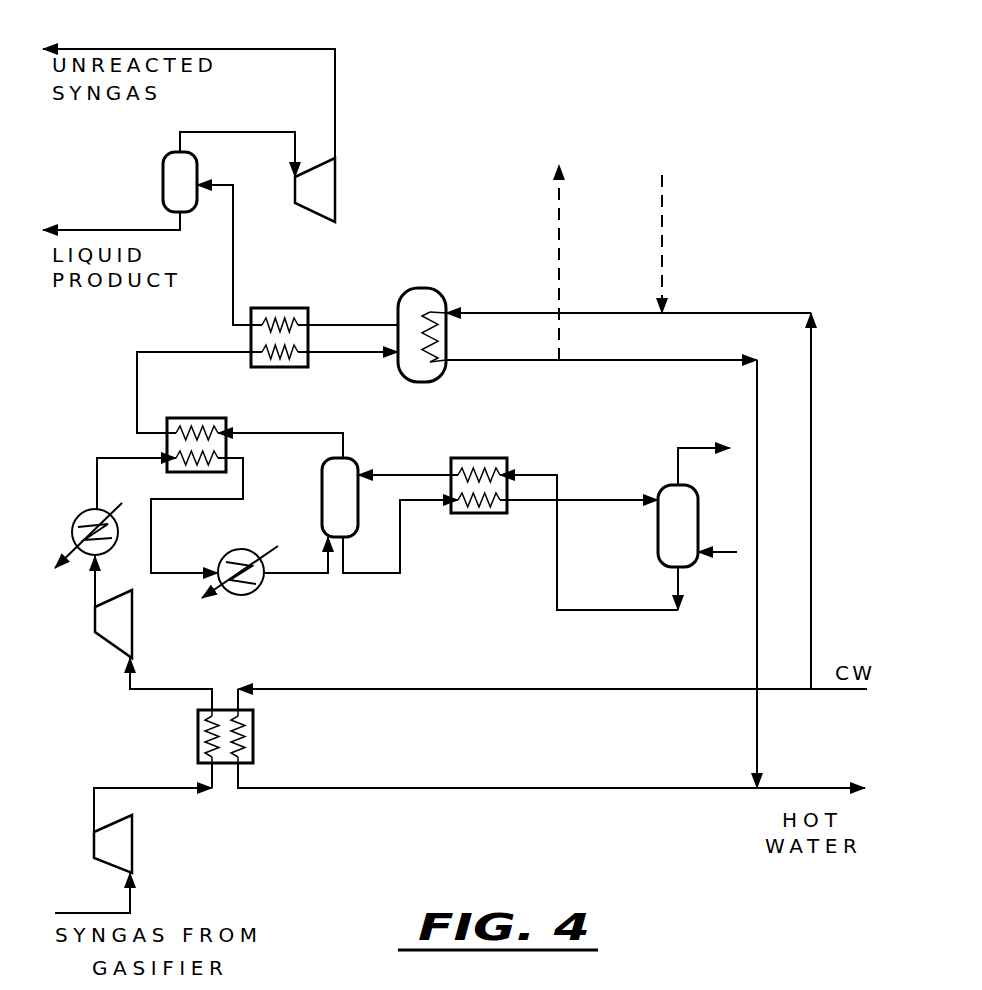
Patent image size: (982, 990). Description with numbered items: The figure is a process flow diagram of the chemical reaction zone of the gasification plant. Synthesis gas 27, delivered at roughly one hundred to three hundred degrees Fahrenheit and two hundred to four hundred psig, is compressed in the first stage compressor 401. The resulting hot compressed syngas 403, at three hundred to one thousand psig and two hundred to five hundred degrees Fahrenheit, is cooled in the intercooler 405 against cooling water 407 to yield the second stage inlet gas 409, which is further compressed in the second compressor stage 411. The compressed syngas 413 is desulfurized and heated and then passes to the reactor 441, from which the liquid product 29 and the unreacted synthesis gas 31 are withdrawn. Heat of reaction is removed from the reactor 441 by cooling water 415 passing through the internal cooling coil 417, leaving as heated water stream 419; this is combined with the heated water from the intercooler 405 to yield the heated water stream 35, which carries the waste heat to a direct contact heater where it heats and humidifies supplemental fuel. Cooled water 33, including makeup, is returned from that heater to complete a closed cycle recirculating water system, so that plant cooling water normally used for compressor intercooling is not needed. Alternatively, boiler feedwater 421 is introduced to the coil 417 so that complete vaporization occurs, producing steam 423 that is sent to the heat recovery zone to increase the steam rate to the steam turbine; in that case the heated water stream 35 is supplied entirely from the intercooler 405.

The synthesis gas 27 is at (93, 912).
The liquid product 29 is at (118, 229).
The unreacted synthesis gas 31 is at (177, 47).
The cooled water 33 is at (845, 690).
The heated water stream 35 is at (790, 787).
The first stage compressor 401 is at (134, 850).
The hot compressed syngas 403 is at (118, 787).
The intercooler 405 is at (255, 742).
The cooling water 407 is at (415, 688).
The second stage inlet gas 409 is at (168, 690).
The second compressor stage 411 is at (134, 628).
The compressed syngas 413 is at (93, 592).
The cooling water 415 is at (738, 312).
The internal cooling coil 417 is at (447, 330).
The heated water stream 419 is at (608, 361).
The boiler feedwater 421 is at (663, 227).
The steam 423 is at (560, 245).
The reactor 441 is at (424, 288).